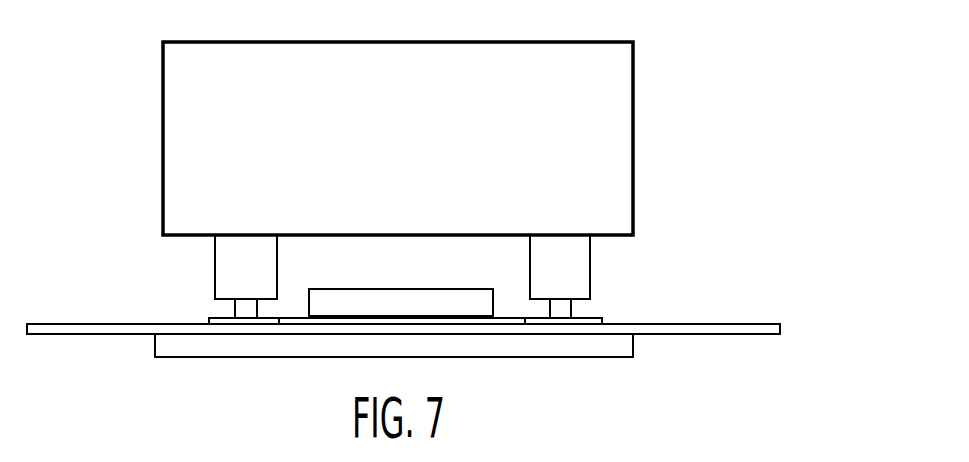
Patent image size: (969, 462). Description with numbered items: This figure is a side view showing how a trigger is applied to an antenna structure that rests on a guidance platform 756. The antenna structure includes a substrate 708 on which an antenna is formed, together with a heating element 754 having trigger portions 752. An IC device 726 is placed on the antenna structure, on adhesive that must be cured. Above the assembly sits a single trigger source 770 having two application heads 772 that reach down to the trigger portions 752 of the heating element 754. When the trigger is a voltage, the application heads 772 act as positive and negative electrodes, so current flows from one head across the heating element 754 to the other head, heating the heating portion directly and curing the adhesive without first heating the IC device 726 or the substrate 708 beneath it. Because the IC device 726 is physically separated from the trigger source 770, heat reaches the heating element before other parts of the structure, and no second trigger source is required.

The trigger source 770 is at (622, 138).
The application heads 772 is at (223, 253).
The trigger portions 752 is at (217, 320).
The heating element 754 is at (512, 320).
The IC device 726 is at (390, 295).
The substrate 708 is at (50, 323).
The guidance platform 756 is at (625, 343).